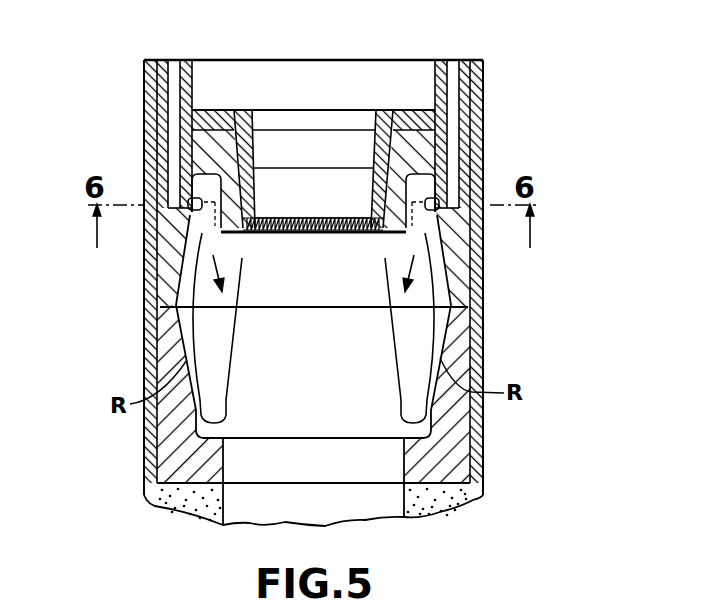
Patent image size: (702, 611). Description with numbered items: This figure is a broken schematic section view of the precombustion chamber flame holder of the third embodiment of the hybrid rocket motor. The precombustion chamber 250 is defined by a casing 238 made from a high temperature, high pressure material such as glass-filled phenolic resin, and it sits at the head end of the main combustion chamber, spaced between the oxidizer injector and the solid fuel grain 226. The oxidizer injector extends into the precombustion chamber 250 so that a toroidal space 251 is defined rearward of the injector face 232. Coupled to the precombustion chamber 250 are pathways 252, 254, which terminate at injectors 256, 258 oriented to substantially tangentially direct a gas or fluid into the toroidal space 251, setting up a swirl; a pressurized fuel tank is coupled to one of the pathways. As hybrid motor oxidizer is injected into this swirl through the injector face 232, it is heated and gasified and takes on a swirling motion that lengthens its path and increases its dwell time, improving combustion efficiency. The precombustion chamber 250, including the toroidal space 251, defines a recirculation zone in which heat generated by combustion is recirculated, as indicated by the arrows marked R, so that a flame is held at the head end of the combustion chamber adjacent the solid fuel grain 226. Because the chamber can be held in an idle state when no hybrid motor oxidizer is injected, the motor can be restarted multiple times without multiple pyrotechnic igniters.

The pathway 252 is at (150, 100).
The pathway 254 is at (455, 102).
The injector 256 is at (147, 149).
The injector 258 is at (440, 200).
The toroidal space 251 is at (392, 108).
The injector face 232 is at (342, 236).
The precombustion chamber 250 is at (340, 365).
The casing 238 is at (172, 258).
The solid fuel grain 226 is at (192, 508).